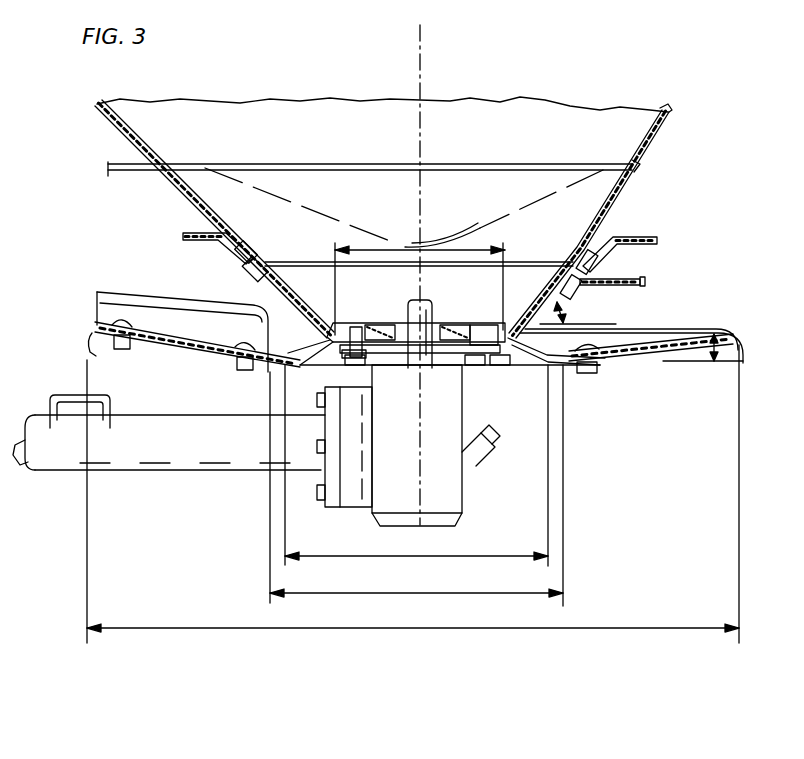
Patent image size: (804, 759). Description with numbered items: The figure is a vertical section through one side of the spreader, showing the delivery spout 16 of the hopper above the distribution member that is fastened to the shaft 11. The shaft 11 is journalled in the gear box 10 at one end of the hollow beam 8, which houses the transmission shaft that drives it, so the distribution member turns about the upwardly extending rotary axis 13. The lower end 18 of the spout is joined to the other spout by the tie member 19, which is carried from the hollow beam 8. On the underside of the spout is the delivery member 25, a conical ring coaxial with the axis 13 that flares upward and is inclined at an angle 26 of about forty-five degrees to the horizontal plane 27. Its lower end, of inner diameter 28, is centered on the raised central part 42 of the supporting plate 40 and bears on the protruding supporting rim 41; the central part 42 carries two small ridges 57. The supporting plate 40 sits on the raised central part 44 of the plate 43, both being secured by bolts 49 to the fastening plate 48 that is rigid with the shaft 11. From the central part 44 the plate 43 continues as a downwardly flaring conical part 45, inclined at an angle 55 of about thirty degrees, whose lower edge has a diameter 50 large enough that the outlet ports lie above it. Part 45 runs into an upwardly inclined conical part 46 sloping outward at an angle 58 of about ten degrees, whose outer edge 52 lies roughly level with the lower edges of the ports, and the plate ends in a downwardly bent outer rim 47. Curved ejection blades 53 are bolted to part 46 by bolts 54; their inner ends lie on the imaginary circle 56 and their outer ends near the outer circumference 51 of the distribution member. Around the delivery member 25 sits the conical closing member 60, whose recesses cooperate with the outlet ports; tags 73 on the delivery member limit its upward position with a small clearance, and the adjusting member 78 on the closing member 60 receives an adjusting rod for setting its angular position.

The hollow beam 8 is at (151, 466).
The gear box 10 is at (457, 505).
The shaft 11 is at (445, 305).
The rotary axis 13 is at (430, 70).
The delivery spout 16 is at (598, 108).
The lower end 18 is at (608, 198).
The tie member 19 is at (113, 176).
The delivery member 25 is at (280, 272).
The angle 26 is at (565, 313).
The horizontal plane 27 is at (612, 326).
The inner diameter 28 is at (405, 250).
The supporting plate 40 is at (508, 370).
The supporting rim 41 is at (522, 338).
The raised central part 42 is at (495, 325).
The part 43 is at (664, 356).
The raised central part 44 is at (483, 370).
The downwardly conically flaring part 45 is at (301, 372).
The upwardly inclined part 46 is at (694, 333).
The outer rim 47 is at (92, 337).
The fastening plate 48 is at (400, 367).
The bolts 49 is at (355, 373).
The diameter 50 is at (450, 556).
The outer circumference 51 is at (386, 628).
The outer edge 52 is at (676, 333).
The ejection blades 53 is at (134, 300).
The bolts 54 is at (226, 364).
The angle 55 is at (538, 364).
The imaginary circle 56 is at (377, 593).
The small ridges 57 is at (348, 330).
The angle 58 is at (714, 362).
The closing member 60 is at (262, 283).
The tags 73 is at (190, 236).
The adjusting member 78 is at (630, 283).